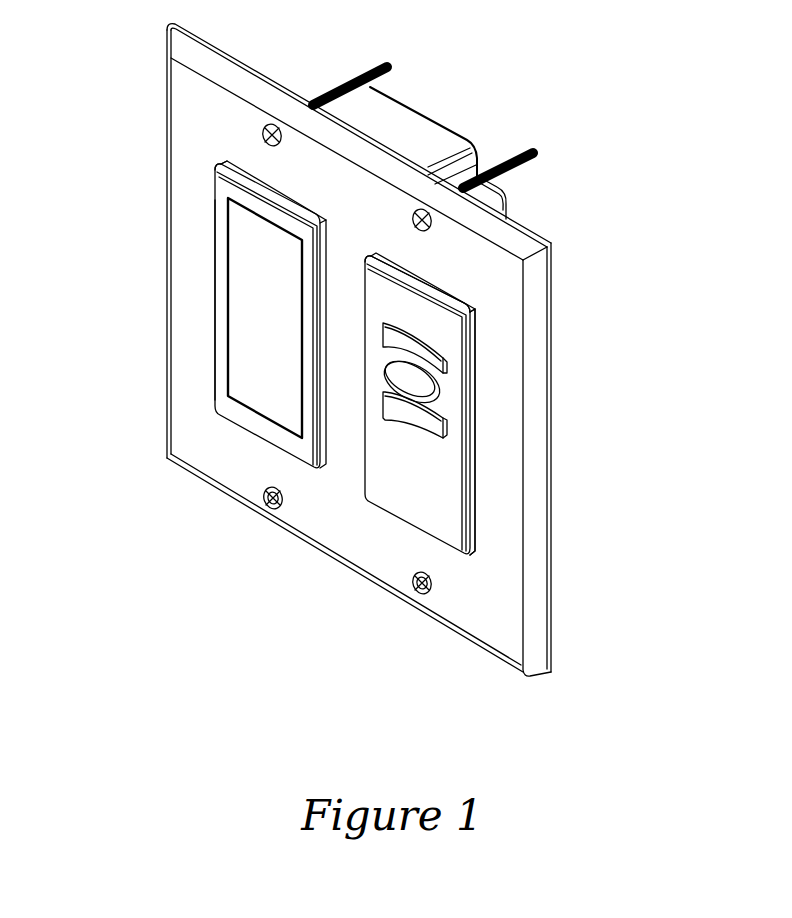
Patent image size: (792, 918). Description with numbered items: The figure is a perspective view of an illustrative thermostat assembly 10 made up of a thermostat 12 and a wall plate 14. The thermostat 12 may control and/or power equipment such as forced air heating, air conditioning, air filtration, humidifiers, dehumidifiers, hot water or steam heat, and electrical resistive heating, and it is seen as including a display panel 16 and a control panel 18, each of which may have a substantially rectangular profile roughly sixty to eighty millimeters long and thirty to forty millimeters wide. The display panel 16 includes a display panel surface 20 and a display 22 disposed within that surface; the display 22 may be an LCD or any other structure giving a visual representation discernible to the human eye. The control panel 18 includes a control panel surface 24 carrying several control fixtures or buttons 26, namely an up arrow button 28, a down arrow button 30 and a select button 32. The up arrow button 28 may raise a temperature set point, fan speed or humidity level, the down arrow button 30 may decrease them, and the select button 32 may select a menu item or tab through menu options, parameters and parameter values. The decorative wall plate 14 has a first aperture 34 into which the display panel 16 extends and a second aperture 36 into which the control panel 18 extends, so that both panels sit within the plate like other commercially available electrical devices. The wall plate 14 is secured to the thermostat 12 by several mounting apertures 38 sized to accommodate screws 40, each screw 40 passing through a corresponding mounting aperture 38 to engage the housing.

The thermostat assembly 10 is at (635, 78).
The thermostat 12 is at (402, 120).
The wall plate 14 is at (488, 618).
The display panel 16 is at (210, 297).
The control panel 18 is at (517, 426).
The display panel surface 20 is at (220, 235).
The display 22 is at (245, 365).
The control panel surface 24 is at (450, 323).
The control fixtures or buttons 26 is at (524, 414).
The up arrow button 28 is at (447, 370).
The down arrow button 30 is at (430, 435).
The select button 32 is at (437, 412).
The first aperture 34 is at (215, 168).
The second aperture 36 is at (473, 562).
The mounting apertures 38 is at (261, 485).
The screws 40 is at (269, 510).